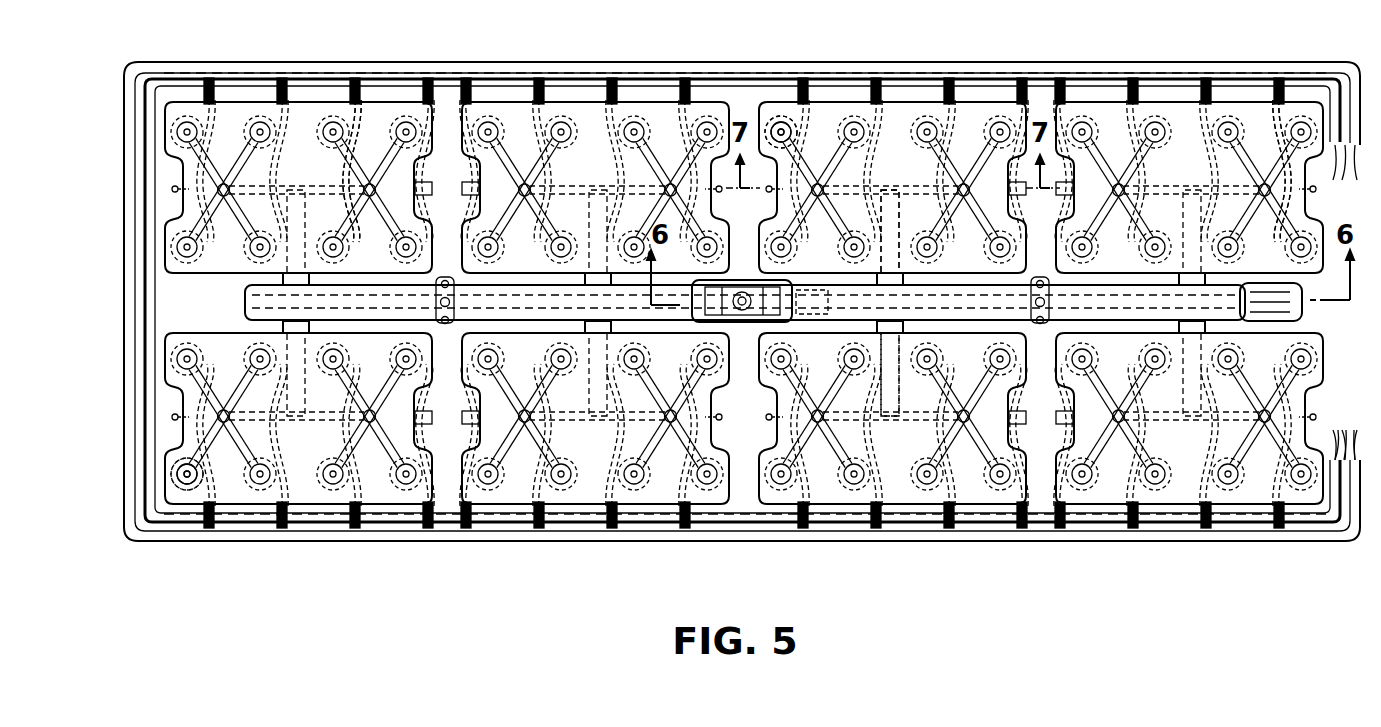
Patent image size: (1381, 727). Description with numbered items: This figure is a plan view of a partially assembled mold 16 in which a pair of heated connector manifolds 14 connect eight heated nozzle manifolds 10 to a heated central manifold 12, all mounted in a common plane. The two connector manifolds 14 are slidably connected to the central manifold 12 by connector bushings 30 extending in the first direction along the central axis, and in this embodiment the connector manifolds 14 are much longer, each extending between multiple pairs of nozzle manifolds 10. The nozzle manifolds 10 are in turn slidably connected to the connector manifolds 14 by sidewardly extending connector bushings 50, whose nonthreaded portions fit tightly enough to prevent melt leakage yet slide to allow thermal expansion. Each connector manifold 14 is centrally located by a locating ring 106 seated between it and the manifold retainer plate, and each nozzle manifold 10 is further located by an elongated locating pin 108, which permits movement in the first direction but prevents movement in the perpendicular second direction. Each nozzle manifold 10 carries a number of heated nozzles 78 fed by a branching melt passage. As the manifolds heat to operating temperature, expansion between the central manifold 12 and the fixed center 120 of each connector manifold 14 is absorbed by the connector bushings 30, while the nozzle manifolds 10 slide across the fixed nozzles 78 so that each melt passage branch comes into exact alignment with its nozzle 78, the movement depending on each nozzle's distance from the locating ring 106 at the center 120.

The nozzle manifold 10 is at (978, 122).
The central manifold 12 is at (651, 100).
The connector manifold 14 is at (243, 300).
The mold 16 is at (1340, 543).
The connector bushing 30 is at (814, 288).
The connector bushing 50 is at (893, 190).
The heated nozzle 78 is at (184, 484).
The locating ring 106 is at (383, 160).
The locating pin 108 is at (788, 118).
The center of the connector manifold 120 is at (446, 280).